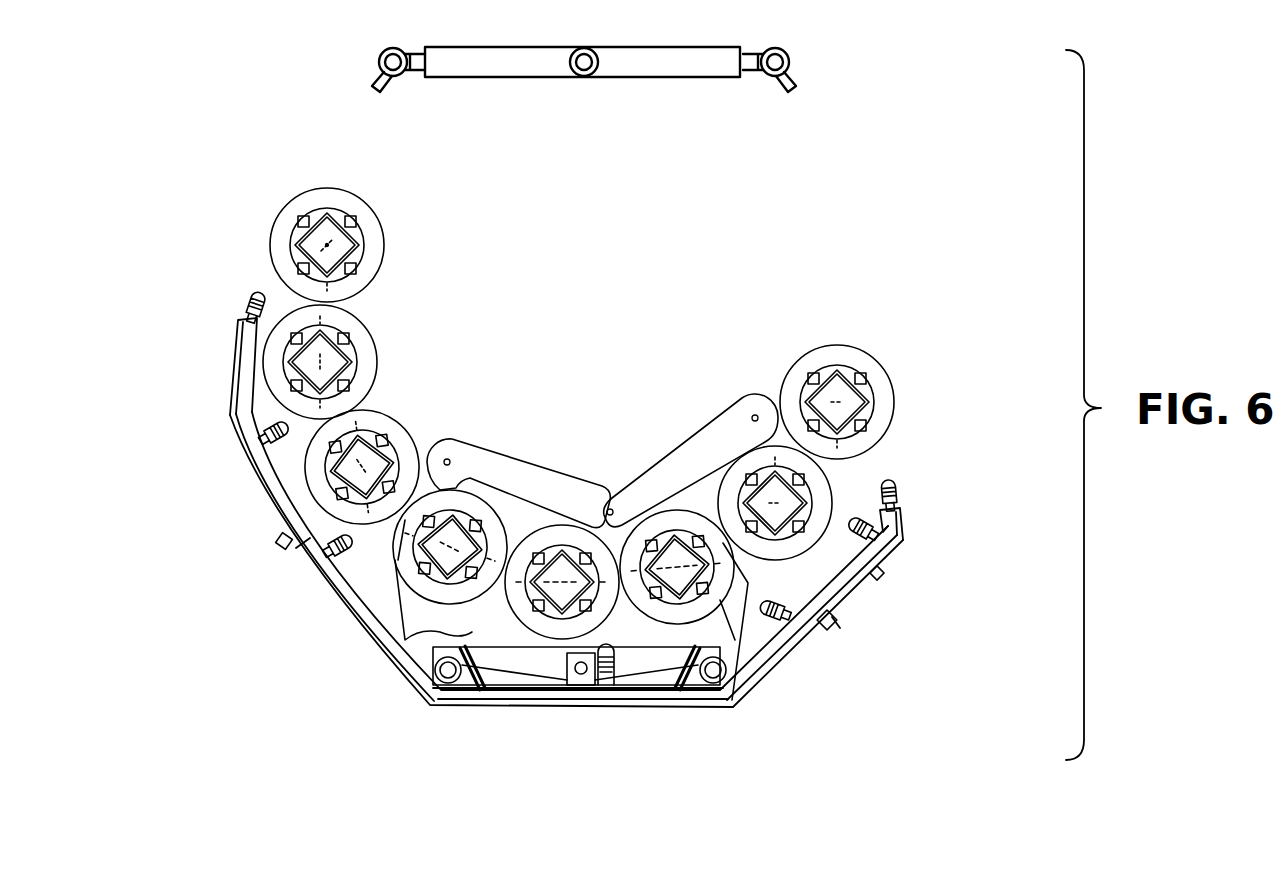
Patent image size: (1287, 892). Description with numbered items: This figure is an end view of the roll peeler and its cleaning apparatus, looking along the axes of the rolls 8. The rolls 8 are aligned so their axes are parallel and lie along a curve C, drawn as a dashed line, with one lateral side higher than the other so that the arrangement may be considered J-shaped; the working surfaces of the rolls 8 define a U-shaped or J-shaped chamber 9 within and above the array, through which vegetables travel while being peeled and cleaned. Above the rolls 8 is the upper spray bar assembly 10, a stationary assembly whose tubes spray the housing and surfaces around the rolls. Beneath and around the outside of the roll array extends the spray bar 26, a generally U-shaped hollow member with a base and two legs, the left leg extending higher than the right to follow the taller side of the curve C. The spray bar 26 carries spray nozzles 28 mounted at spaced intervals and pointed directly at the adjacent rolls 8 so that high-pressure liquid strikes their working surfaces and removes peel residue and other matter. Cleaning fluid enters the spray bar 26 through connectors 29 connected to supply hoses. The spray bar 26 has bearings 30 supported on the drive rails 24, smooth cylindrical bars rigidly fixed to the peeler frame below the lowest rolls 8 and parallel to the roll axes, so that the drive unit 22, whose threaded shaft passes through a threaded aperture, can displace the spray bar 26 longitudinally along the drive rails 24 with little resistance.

The rolls 8 is at (412, 433).
The chamber 9 is at (602, 330).
The upper spray bar assembly 10 is at (802, 57).
The drive unit 22 is at (580, 672).
The drive rails 24 is at (700, 690).
The spray bar 26 is at (386, 688).
The spray nozzles 28 is at (252, 330).
The connectors 29 is at (278, 542).
The bearings 30 is at (697, 635).
The curve C is at (327, 245).